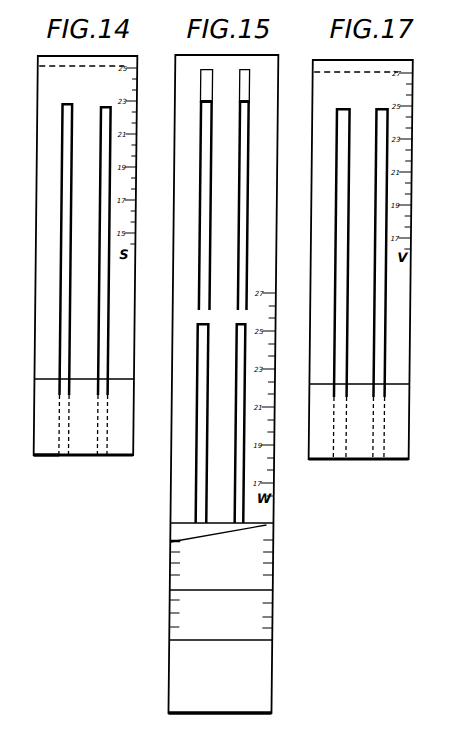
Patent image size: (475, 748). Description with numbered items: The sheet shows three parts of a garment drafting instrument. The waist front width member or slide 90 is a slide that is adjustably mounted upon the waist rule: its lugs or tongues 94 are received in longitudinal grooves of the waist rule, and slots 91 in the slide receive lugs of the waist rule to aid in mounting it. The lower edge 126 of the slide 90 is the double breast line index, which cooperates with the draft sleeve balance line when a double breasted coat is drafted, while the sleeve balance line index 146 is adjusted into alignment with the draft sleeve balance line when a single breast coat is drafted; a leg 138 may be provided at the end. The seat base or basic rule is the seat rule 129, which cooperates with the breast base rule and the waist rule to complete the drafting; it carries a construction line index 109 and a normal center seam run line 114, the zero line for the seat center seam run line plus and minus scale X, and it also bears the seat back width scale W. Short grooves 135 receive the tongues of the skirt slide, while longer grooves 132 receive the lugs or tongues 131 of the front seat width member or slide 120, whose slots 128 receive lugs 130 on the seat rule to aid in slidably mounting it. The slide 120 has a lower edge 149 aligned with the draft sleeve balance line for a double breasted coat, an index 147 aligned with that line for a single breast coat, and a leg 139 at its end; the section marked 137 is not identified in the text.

In FIG. 14, the waist front width member or slide 90 is at (39, 440).
In FIG. 14, the slots 91 is at (99, 300).
In FIG. 14, the lugs or tongues 94 is at (102, 449).
In FIG. 14, the lower edge 126 is at (61, 457).
In FIG. 15, the seat rule 129 is at (186, 419).
In FIG. 15, the short grooves 135 is at (242, 447).
In FIG. 14, the sleeve balance line index 146 is at (112, 383).
In FIG. 14, the leg 138 is at (59, 67).
In FIG. 15, the lugs 130 is at (242, 90).
In FIG. 15, the longer grooves 132 is at (239, 232).
In FIG. 15, the construction line index 109 is at (252, 643).
In FIG. 15, the normal center seam run line 114 is at (237, 590).
In FIG. 15, the section region 137 is at (208, 683).
In FIG. 17, the front seat width member or slide 120 is at (320, 423).
In FIG. 17, the leg 139 is at (339, 67).
In FIG. 17, the slots 128 is at (378, 237).
In FIG. 17, the index 147 is at (322, 385).
In FIG. 17, the lower edge 149 is at (330, 461).
In FIG. 17, the lugs or tongues 131 is at (343, 436).